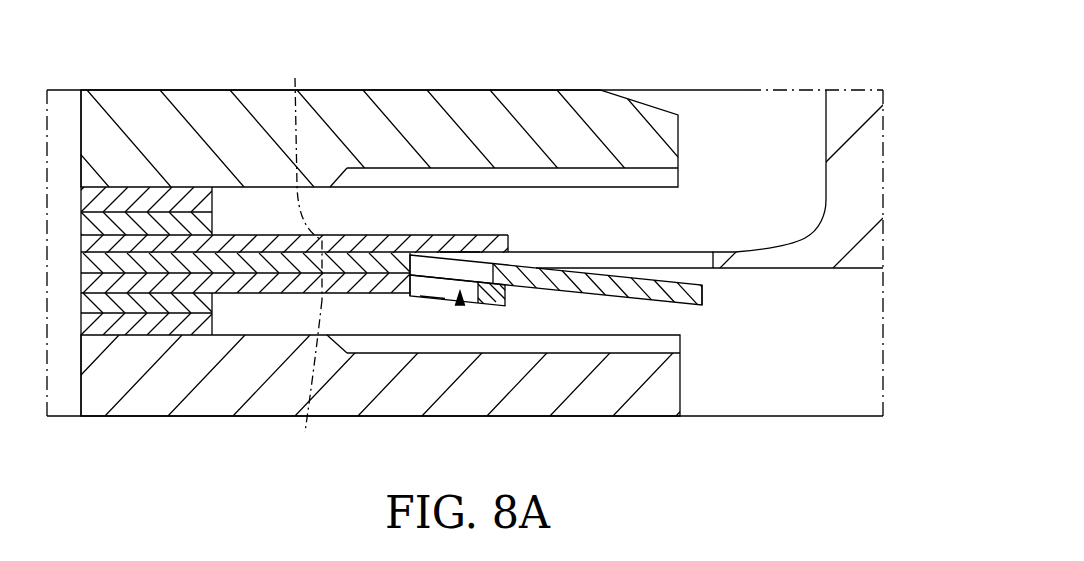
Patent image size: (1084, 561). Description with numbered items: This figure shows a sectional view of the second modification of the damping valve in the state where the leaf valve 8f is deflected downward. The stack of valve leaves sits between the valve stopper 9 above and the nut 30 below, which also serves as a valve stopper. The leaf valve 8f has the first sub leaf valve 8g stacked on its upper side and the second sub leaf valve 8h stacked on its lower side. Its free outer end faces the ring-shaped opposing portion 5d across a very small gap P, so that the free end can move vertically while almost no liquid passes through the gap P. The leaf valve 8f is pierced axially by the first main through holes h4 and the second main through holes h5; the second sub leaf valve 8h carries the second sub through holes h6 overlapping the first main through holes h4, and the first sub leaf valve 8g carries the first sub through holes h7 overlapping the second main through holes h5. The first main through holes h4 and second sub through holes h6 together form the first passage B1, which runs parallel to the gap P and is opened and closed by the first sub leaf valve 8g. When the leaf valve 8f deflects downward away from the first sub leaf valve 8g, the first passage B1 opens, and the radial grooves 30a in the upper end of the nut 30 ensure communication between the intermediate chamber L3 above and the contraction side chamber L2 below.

The valve stopper 9 is at (658, 106).
The nut 30 is at (683, 395).
The grooves 30a is at (613, 352).
The first sub leaf valve 8g is at (502, 228).
The leaf valve 8f is at (700, 307).
The second sub leaf valve 8h is at (507, 302).
The opposing portion 5d is at (750, 248).
The first main through holes h4 is at (457, 252).
The second main through holes h5 is at (298, 383).
The second sub through holes h6 is at (433, 297).
The first sub through holes h7 is at (300, 176).
The gap P is at (708, 278).
The first passage B1 is at (460, 303).
The contraction side chamber L2 is at (863, 385).
The intermediate chamber L3 is at (780, 118).